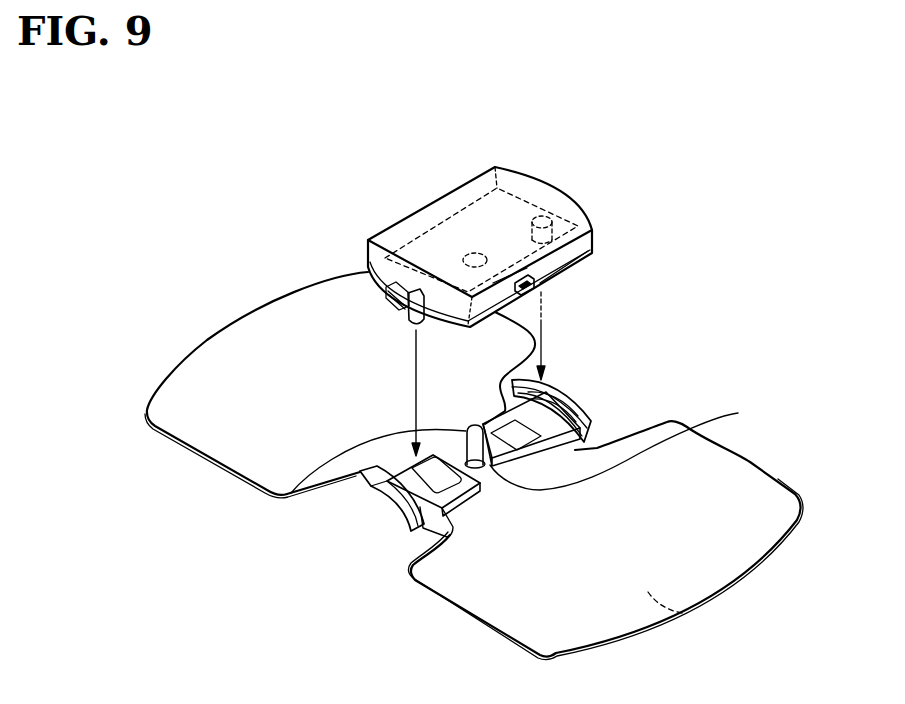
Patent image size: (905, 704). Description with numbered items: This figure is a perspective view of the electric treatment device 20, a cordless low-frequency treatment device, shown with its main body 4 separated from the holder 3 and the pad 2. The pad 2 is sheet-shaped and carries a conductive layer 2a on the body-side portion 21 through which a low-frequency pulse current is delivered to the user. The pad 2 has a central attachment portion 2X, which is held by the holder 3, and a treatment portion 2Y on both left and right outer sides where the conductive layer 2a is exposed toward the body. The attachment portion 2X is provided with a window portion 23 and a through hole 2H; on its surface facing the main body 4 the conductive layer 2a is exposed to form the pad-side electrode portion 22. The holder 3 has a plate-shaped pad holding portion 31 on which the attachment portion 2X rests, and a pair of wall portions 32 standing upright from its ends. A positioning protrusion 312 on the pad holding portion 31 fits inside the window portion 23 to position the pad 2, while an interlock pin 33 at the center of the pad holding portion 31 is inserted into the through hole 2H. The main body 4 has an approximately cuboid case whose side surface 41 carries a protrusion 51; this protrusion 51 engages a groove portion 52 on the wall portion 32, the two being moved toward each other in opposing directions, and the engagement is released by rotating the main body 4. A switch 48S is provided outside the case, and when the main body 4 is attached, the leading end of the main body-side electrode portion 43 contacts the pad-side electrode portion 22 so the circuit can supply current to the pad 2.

The electric treatment device 20 is at (681, 164).
The pad 2 is at (755, 463).
The conductive layer 2a is at (475, 446).
The body-side portion 21 is at (690, 619).
The pad-side electrode portion 22 is at (653, 426).
The window portion 23 is at (486, 500).
The through hole 2H is at (622, 442).
The attachment portion 2X is at (468, 497).
The treatment portion 2Y is at (268, 328).
The holder 3 is at (362, 526).
The pad holding portion 31 is at (400, 532).
The positioning protrusion 312 is at (440, 475).
The wall portion 32 is at (380, 499).
The interlock pin 33 is at (368, 444).
The main body 4 is at (558, 181).
The side surface 41 is at (386, 289).
The main body-side electrode portion 43 is at (578, 226).
The switch 48S is at (532, 283).
The protrusion 51 is at (396, 305).
The groove portion 52 is at (548, 390).